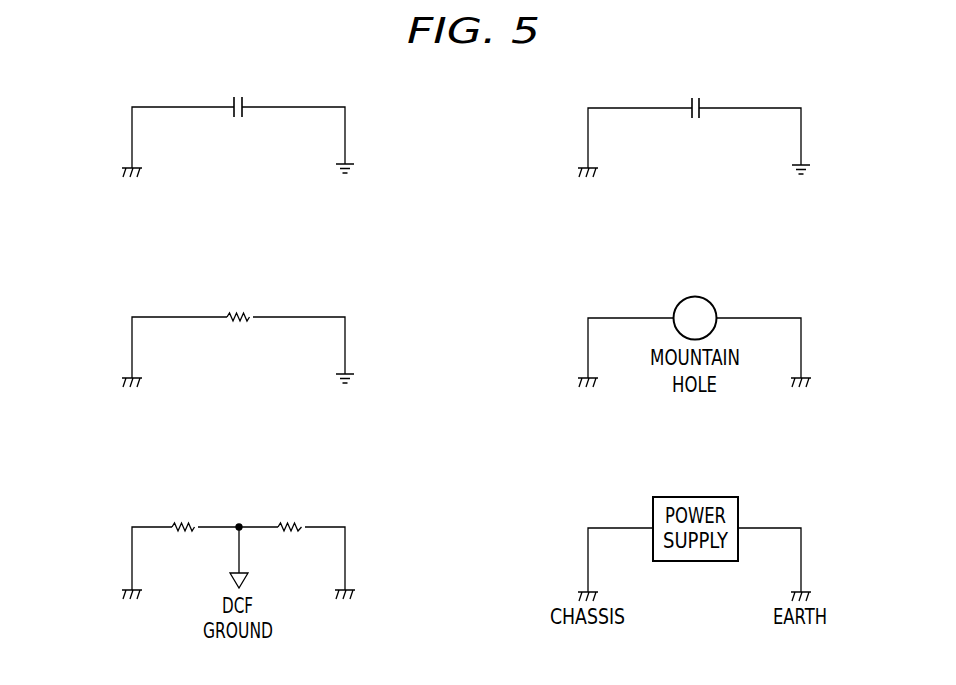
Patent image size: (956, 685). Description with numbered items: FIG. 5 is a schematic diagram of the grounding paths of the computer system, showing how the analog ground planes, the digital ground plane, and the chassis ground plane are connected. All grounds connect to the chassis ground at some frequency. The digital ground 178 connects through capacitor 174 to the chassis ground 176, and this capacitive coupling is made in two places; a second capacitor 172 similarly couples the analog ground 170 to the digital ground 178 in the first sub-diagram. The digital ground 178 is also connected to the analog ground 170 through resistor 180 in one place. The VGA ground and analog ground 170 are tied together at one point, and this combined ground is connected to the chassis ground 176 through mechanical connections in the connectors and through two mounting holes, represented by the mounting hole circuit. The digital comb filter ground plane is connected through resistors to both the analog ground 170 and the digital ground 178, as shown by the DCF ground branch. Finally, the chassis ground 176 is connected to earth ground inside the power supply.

The analog ground 170 is at (120, 174).
The capacitor 172 is at (240, 94).
The capacitor 174 is at (697, 96).
The chassis ground 176 is at (576, 175).
The digital ground 178 is at (356, 166).
The resistor 180 is at (233, 308).